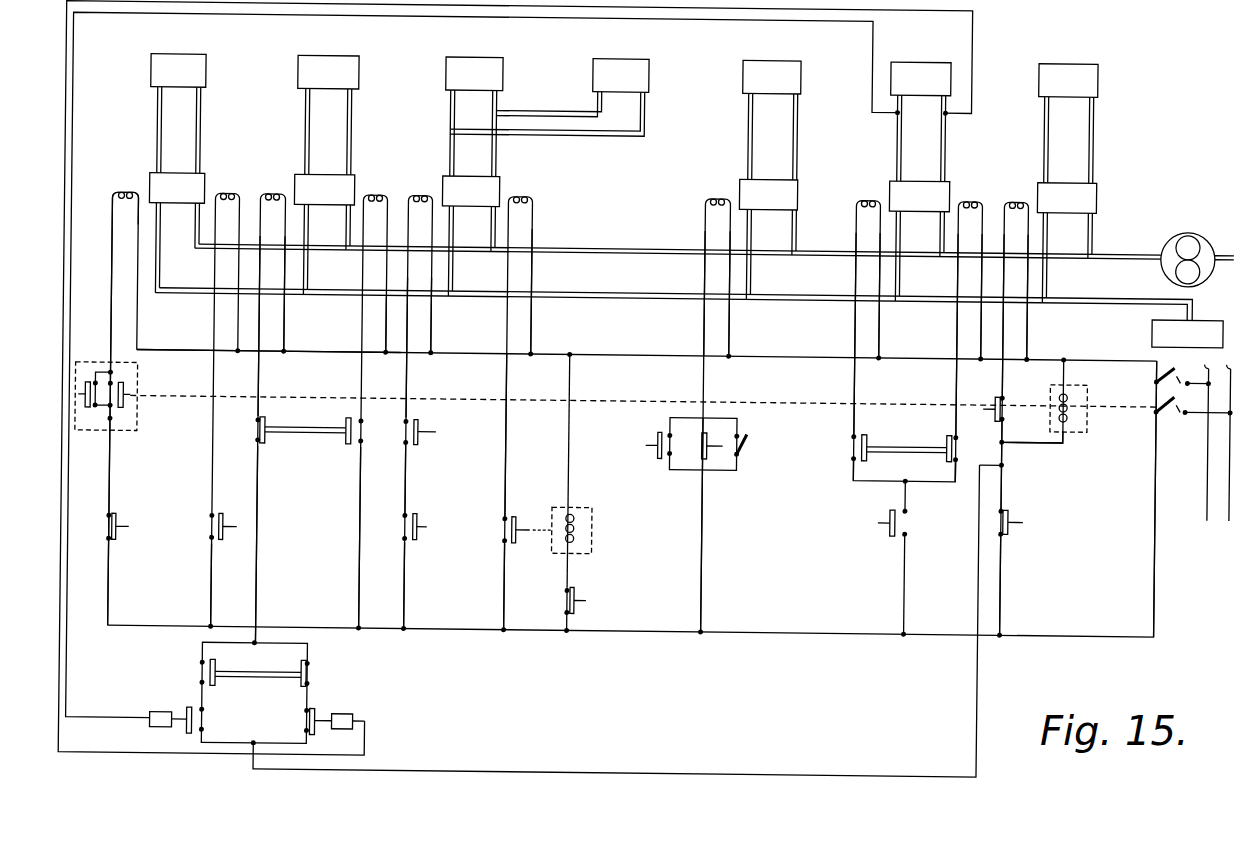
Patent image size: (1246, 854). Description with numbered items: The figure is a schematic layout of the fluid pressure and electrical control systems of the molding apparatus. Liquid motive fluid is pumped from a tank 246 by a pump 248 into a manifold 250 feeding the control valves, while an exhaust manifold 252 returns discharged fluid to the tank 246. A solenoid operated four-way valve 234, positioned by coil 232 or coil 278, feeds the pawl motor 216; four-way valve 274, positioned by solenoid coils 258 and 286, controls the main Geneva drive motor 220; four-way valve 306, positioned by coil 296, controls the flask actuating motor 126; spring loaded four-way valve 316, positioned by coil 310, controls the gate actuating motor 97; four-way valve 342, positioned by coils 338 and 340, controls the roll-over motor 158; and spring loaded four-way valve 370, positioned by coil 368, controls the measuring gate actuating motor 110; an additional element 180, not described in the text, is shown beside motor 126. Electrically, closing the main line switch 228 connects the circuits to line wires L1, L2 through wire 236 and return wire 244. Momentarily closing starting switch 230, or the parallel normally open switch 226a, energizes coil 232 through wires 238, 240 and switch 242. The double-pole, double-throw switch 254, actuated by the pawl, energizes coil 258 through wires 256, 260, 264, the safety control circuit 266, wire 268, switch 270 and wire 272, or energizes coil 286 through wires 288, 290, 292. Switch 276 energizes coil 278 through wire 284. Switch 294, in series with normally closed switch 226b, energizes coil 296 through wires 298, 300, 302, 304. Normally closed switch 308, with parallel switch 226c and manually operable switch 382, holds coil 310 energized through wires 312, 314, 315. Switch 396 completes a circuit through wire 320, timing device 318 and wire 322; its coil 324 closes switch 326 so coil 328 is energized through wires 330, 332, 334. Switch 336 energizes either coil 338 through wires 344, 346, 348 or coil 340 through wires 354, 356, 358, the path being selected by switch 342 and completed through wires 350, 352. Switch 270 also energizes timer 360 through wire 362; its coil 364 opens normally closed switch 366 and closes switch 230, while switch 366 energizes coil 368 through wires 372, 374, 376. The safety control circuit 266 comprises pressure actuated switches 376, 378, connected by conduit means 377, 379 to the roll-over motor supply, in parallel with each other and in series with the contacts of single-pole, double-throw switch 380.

The pawl motor 216 is at (181, 67).
The solenoid operated four-way valve 234 is at (200, 176).
The main Geneva drive motor 220 is at (325, 66).
The four-way valve 274 is at (355, 175).
The flask actuating motor 126 is at (478, 67).
The four-way valve 306 is at (498, 178).
The motor 180 is at (623, 67).
The gate actuating motor 97 is at (771, 67).
The four-way spring loaded valve 316 is at (738, 178).
The roll-over motor 158 is at (911, 70).
The four-way valve 342 is at (888, 178).
The measuring gate actuating motor 110 is at (1071, 68).
The spring loaded four-way valve 370 is at (1094, 178).
The manifold 250 is at (650, 238).
The exhaust manifold 252 is at (660, 289).
The pump 248 is at (1194, 229).
The tank 246 is at (1216, 310).
The wire 236 is at (690, 355).
The wire 290 is at (361, 340).
The wire 244 is at (168, 629).
The coil 232 is at (134, 197).
The wire 238 is at (109, 226).
The wire 240 is at (111, 454).
The solenoid coil 278 is at (225, 199).
The wire 284 is at (213, 584).
The solenoid coil 258 is at (270, 199).
The wire 260 is at (258, 310).
The wire 256 is at (283, 325).
The wire 264 is at (258, 612).
The solenoid coil 286 is at (372, 199).
The wire 288 is at (385, 356).
The wire 292 is at (361, 533).
The solenoid coil 296 is at (421, 200).
The wire 300 is at (431, 308).
The wire 298 is at (431, 332).
The wire 302 is at (407, 468).
The wire 304 is at (407, 582).
The solenoid coil 328 is at (525, 199).
The wire 330 is at (532, 280).
The wire 332 is at (506, 378).
The wire 334 is at (506, 593).
The solenoid coil 310 is at (718, 199).
The wire 314 is at (703, 318).
The wire 312 is at (729, 318).
The wire 315 is at (704, 580).
The solenoid coil 340 is at (875, 185).
The wire 356 is at (854, 312).
The wire 354 is at (878, 340).
The solenoid coil 338 is at (966, 199).
The wire 346 is at (956, 313).
The wire 344 is at (980, 338).
The solenoid coil 368 is at (1012, 199).
The wire 374 is at (1003, 313).
The wire 372 is at (1027, 338).
The wire 272 is at (1003, 580).
The switch 226a is at (82, 395).
The switch 230 is at (123, 410).
The switch 242 is at (127, 529).
The switch 276 is at (231, 549).
The double-pole, double-throw switch 254 is at (318, 437).
The switch 294 is at (436, 434).
The switch 226b is at (427, 528).
The switch 326 is at (521, 518).
The timing device 318 is at (593, 512).
The solenoid coil 324 is at (577, 529).
The second switch 396 is at (592, 588).
The wire 322 is at (574, 622).
The switch 226c is at (655, 432).
The wire 320 is at (570, 443).
The normally closed switch 308 is at (714, 469).
The manually operable switch 382 is at (749, 434).
The wire 358 is at (854, 477).
The wire 350 is at (906, 497).
The wire 348 is at (957, 478).
The switch 336 is at (879, 520).
The wire 352 is at (906, 583).
The normally closed switch 366 is at (995, 394).
The solenoid coil 364 is at (1072, 395).
The timing mechanism 360 is at (1080, 406).
The wire 362 is at (1063, 438).
The pressure actuated switch 376 is at (1002, 432).
The switch 270 is at (1024, 518).
The wire 268 is at (253, 773).
The main line switch 228 is at (1160, 408).
The line wire L1 is at (1199, 434).
The line wire L2 is at (1211, 434).
The safety control circuit 266 is at (296, 704).
The single-pole, double-throw switch 380 is at (274, 681).
The pressure actuated switch 378 is at (164, 717).
The conduit means 377 is at (369, 741).
The conduit means 379 is at (128, 730).